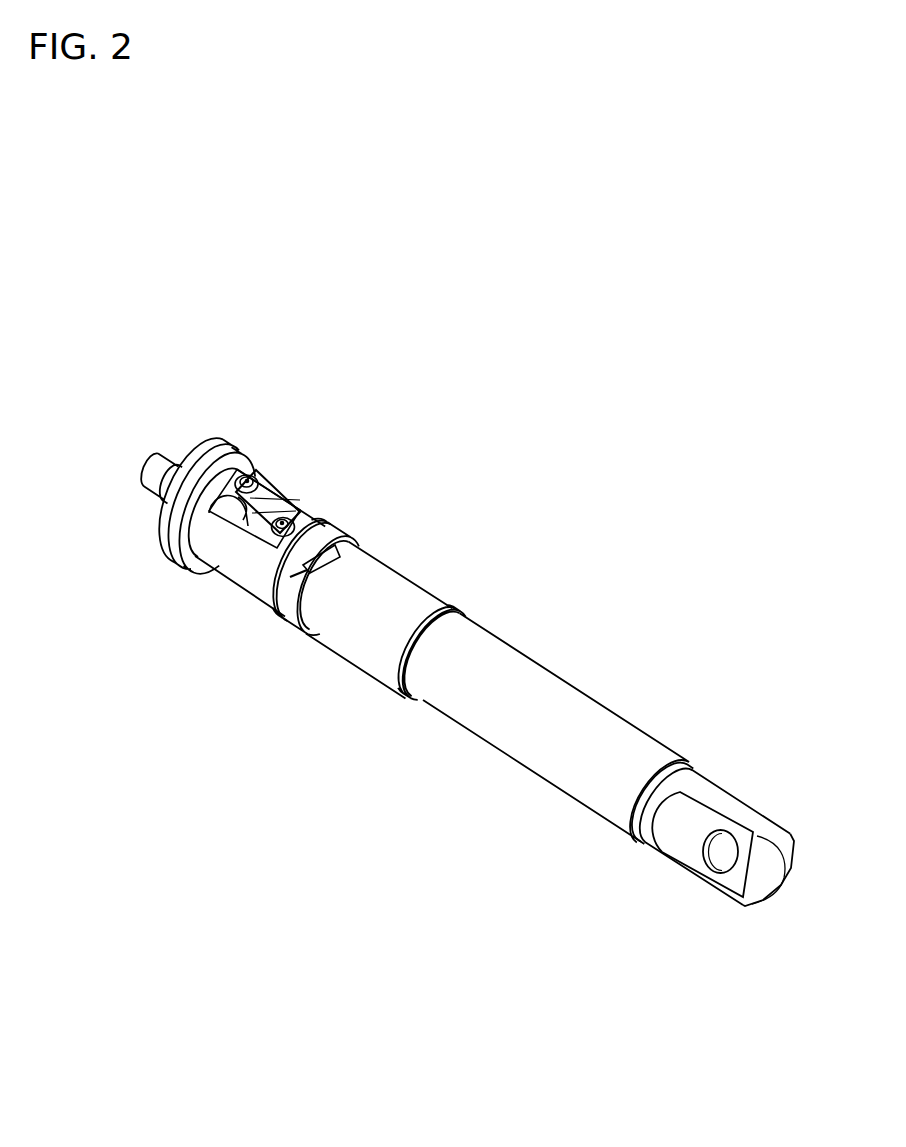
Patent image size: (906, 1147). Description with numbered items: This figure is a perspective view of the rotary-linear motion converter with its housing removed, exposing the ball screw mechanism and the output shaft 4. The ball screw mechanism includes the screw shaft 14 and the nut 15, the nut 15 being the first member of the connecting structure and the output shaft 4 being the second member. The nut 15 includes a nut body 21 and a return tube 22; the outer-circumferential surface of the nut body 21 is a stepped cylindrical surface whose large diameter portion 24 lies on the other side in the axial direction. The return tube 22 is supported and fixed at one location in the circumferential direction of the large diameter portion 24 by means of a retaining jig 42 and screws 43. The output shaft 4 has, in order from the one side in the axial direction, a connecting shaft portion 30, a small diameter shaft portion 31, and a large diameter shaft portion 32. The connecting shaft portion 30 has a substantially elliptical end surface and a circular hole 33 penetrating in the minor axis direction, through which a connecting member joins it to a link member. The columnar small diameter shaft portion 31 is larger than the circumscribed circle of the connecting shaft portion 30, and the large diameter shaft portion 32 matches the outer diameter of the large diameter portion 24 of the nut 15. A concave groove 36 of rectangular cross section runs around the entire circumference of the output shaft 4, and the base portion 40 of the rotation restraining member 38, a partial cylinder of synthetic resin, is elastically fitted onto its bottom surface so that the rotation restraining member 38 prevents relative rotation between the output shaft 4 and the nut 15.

The output shaft 4 is at (466, 748).
The screw shaft 14 is at (160, 460).
The nut 15 is at (240, 602).
The nut body 21 is at (223, 553).
The return tube 22 is at (208, 509).
The large diameter portion 24 is at (234, 567).
The connecting shaft portion 30 is at (683, 845).
The small diameter shaft portion 31 is at (565, 763).
The large diameter shaft portion 32 is at (408, 592).
The circular hole 33 is at (720, 856).
The concave groove 36 is at (295, 600).
The rotation restraining member 38 is at (343, 533).
The base portion 40 is at (348, 538).
The retaining jig 42 is at (264, 500).
The screws 43 is at (249, 478).